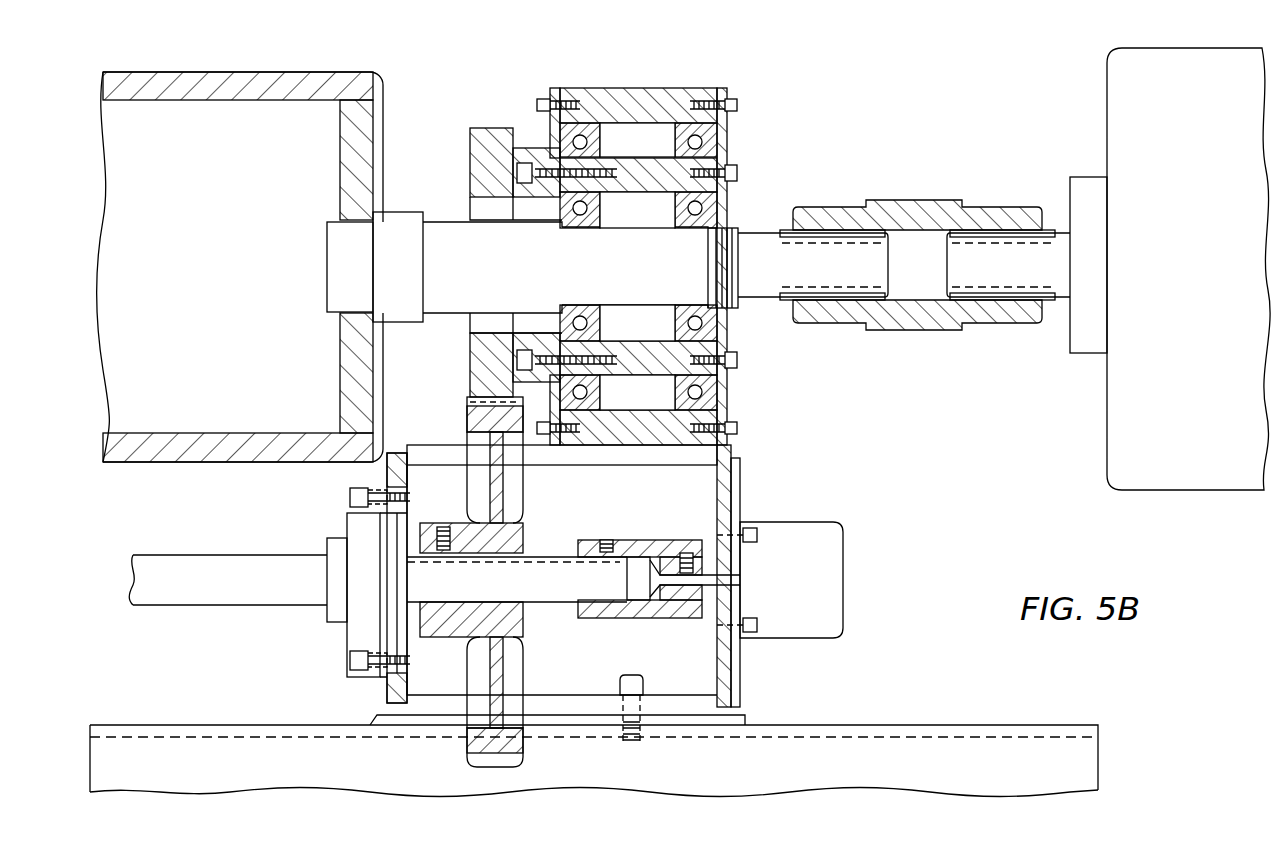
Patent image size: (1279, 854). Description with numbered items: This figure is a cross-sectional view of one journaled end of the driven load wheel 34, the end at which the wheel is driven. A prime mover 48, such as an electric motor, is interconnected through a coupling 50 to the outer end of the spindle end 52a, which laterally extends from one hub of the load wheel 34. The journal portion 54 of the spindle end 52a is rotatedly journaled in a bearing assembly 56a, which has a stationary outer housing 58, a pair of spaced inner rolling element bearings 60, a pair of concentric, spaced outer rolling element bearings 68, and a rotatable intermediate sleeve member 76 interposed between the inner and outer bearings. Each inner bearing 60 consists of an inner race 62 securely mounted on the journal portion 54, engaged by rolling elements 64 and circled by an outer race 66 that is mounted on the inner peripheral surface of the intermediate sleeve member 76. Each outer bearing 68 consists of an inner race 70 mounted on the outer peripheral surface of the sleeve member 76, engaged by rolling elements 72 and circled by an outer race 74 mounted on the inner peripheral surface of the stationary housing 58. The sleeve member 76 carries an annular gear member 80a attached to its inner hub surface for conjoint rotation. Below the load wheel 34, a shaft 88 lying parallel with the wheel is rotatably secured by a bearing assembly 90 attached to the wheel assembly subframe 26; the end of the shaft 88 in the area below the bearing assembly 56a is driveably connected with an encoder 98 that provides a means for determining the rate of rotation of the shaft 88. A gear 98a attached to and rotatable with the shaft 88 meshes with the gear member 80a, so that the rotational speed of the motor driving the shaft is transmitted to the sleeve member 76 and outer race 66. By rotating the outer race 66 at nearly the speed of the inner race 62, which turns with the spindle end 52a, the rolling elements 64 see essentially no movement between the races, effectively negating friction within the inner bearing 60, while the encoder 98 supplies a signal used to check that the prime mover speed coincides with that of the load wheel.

The load wheel 34 is at (227, 84).
The spindle end 52a is at (445, 253).
The journal portion 54 is at (651, 267).
The annular gear member 80a is at (482, 158).
The bearing assembly 56a is at (686, 272).
The stationary outer housing 58 is at (648, 102).
The inner race 70 is at (682, 158).
The rolling elements 72 is at (722, 145).
The intermediate sleeve member 76 is at (655, 173).
The outer race 66 is at (568, 337).
The rolling elements 64 is at (583, 313).
The inner race 62 is at (694, 316).
The inner rolling element bearing 60 is at (638, 307).
The outer rolling element bearing 68 is at (680, 392).
The outer race 74 is at (690, 394).
The coupling 50 is at (907, 324).
The prime mover 48 is at (1121, 405).
The gear 98a is at (493, 490).
The bearing assembly 90 is at (380, 540).
The shaft 88 is at (252, 587).
The encoder 98 is at (822, 554).
The wheel assembly subframe 26 is at (955, 757).